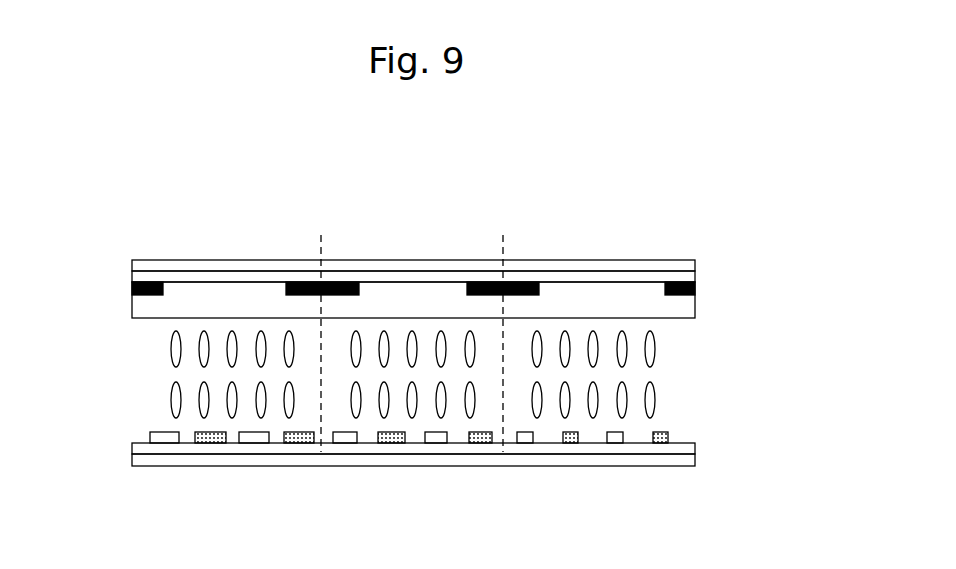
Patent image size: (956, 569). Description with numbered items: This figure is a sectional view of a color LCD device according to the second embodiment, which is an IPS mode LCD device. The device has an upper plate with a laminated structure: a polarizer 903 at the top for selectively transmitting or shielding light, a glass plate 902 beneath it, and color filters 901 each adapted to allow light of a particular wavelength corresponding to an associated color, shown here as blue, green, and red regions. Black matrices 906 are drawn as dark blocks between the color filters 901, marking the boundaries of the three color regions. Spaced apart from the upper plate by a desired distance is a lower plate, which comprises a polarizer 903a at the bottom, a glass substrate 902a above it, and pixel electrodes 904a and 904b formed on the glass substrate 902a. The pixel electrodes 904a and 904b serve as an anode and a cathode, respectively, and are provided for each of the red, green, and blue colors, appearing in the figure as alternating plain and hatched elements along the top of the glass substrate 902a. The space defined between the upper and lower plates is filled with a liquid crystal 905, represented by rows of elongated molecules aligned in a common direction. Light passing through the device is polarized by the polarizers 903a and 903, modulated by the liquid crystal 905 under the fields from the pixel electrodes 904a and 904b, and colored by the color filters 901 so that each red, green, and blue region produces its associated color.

The color filters 901 is at (693, 303).
The glass plate 902 is at (697, 275).
The polarizer 903 is at (697, 261).
The black matrices 906 is at (300, 282).
The liquid crystal 905 is at (654, 391).
The pixel electrodes 904a is at (157, 434).
The pixel electrodes 904b is at (210, 443).
The glass substrate 902a is at (695, 450).
The polarizer 903a is at (687, 464).